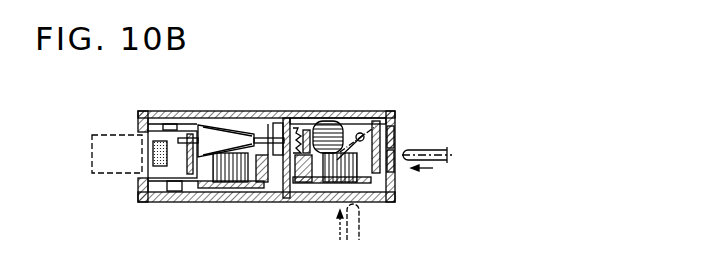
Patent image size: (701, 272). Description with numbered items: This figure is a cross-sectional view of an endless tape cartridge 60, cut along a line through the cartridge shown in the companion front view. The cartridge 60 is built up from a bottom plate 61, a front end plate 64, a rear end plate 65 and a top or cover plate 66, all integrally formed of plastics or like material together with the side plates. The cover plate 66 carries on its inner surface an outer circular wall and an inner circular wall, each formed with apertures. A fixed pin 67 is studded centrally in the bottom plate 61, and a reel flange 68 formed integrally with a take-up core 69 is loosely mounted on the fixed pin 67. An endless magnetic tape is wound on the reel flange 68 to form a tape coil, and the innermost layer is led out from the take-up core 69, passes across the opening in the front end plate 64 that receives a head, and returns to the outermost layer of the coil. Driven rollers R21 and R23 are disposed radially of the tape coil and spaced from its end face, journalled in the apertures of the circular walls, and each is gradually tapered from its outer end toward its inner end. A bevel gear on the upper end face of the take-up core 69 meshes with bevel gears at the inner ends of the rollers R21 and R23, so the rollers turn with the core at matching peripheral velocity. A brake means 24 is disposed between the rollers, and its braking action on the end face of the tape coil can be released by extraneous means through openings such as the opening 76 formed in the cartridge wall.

The endless tape cartridge 60 is at (384, 108).
The bottom plate 61 is at (337, 200).
The front end plate 64 is at (150, 184).
The rear end plate 65 is at (414, 146).
The cover plate 66 is at (352, 112).
The fixed pin 67 is at (300, 178).
The reel flange 68 is at (364, 192).
The take-up core 69 is at (262, 190).
The opening 76 is at (399, 141).
The driven roller R21 is at (214, 191).
The driven roller R23 is at (321, 192).
The brake means 24 is at (426, 182).